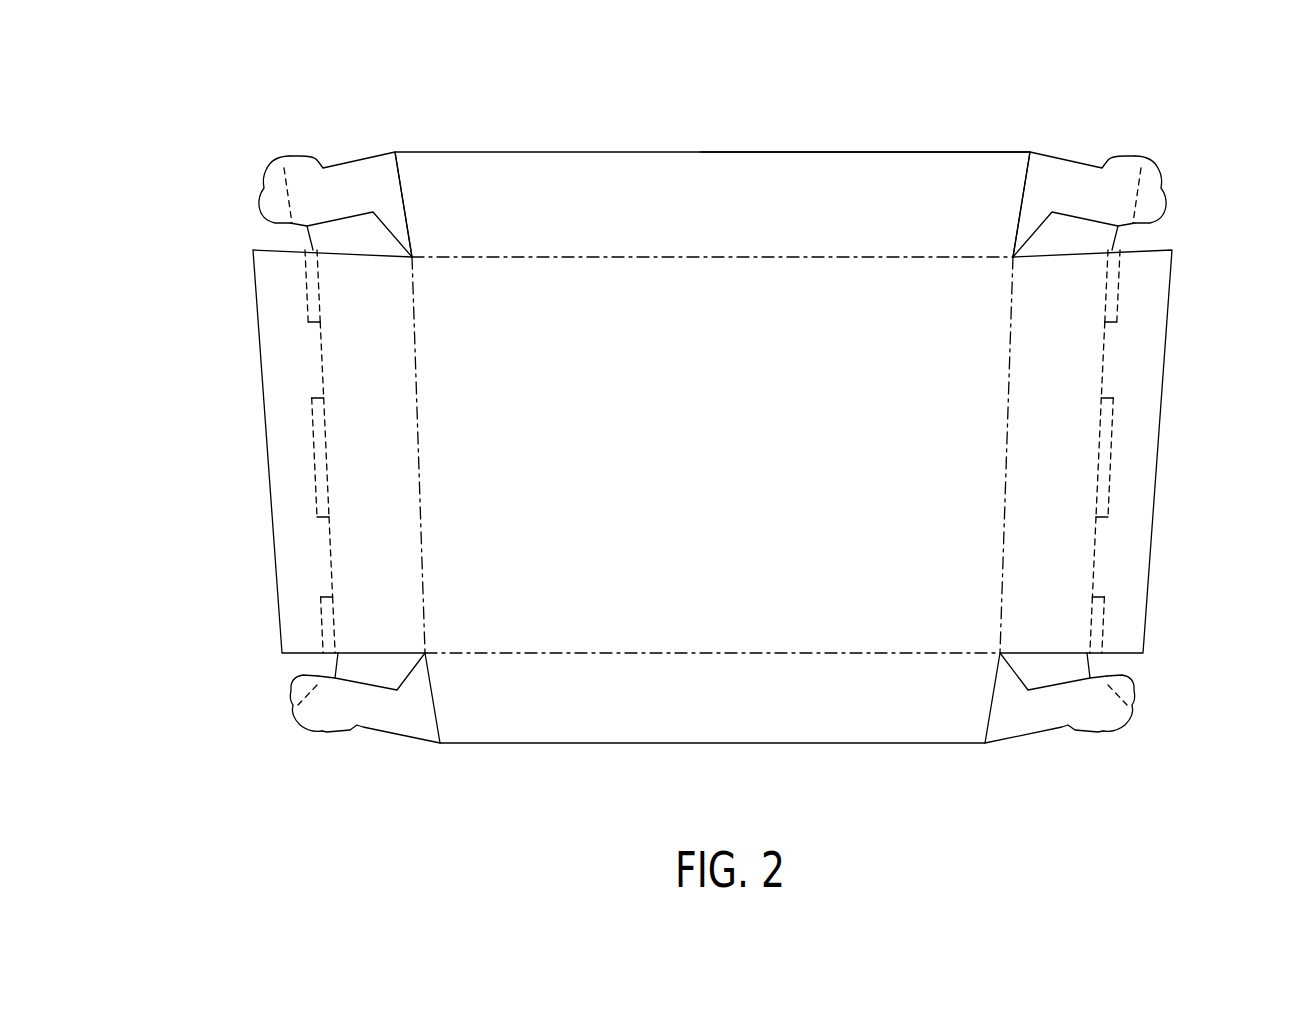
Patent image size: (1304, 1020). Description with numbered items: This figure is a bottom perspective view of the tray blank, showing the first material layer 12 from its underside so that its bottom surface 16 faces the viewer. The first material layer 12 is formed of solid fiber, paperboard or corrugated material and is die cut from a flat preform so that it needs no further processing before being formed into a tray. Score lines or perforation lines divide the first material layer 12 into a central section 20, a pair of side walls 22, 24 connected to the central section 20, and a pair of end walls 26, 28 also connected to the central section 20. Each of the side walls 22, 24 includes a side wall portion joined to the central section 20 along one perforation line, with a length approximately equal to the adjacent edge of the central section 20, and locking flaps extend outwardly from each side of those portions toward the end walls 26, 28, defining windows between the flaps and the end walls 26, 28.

The first material layer 12 is at (653, 172).
The bottom surface 16 is at (557, 180).
The central section 20 is at (664, 483).
The side wall 22 is at (798, 170).
The side wall 24 is at (627, 728).
The end wall 26 is at (293, 445).
The end wall 28 is at (1147, 420).